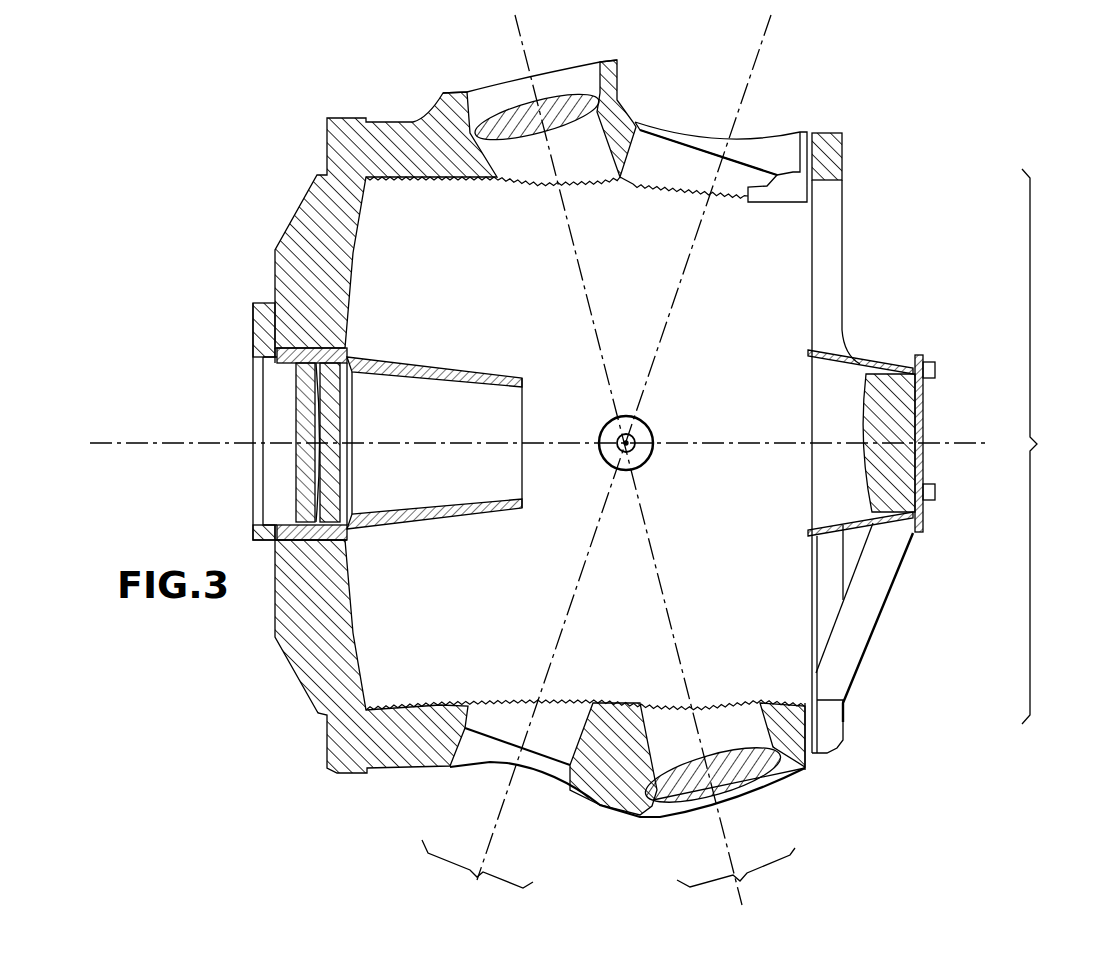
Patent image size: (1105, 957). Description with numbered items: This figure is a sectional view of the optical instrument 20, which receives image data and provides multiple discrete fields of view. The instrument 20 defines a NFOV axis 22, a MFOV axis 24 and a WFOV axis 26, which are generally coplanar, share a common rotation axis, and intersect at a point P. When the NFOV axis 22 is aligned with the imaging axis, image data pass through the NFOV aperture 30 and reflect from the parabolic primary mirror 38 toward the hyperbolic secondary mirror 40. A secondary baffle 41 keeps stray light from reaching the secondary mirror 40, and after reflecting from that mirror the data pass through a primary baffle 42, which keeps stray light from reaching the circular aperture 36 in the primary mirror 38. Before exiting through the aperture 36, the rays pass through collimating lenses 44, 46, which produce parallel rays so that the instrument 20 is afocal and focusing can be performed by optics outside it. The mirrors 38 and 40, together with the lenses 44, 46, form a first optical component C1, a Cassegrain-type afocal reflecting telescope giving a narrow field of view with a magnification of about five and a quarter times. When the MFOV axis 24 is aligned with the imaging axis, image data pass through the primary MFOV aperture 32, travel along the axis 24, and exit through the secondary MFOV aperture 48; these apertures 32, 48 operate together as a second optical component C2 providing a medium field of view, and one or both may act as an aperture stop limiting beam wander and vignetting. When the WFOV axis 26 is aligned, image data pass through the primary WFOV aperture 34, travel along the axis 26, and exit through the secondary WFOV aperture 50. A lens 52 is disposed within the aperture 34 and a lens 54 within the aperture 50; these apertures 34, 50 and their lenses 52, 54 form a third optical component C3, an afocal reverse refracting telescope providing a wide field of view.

The optical instrument 20 is at (243, 129).
The NFOV axis 22 is at (140, 442).
The MFOV axis 24 is at (768, 45).
The WFOV axis 26 is at (537, 42).
The NFOV aperture 30 is at (830, 183).
The primary MFOV aperture 32 is at (637, 162).
The primary WFOV aperture 34 is at (482, 95).
The circular aperture 36 is at (278, 380).
The primary mirror 38 is at (357, 252).
The secondary mirror 40 is at (865, 482).
The secondary baffle 41 is at (837, 362).
The primary baffle 42 is at (462, 358).
The collimating lens 44 is at (347, 468).
The collimating lens 46 is at (294, 466).
The secondary MFOV aperture 48 is at (450, 748).
The secondary WFOV aperture 50 is at (665, 815).
The lens 52 is at (512, 103).
The lens 54 is at (752, 792).
The point P is at (641, 436).
The first optical component C1 is at (1047, 446).
The second optical component C2 is at (477, 876).
The third optical component C3 is at (736, 885).